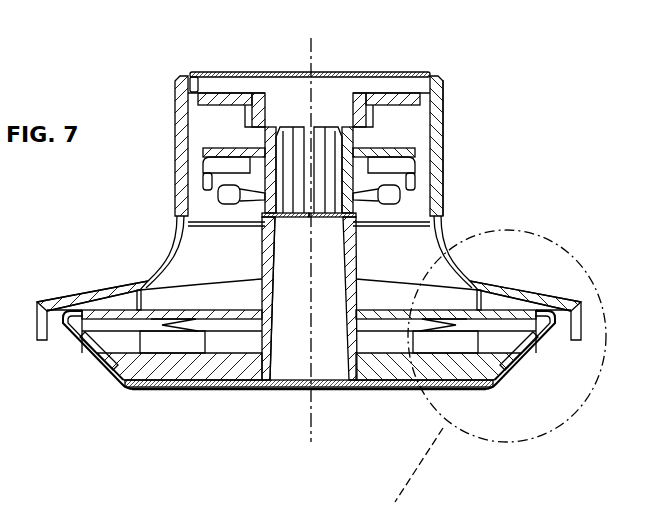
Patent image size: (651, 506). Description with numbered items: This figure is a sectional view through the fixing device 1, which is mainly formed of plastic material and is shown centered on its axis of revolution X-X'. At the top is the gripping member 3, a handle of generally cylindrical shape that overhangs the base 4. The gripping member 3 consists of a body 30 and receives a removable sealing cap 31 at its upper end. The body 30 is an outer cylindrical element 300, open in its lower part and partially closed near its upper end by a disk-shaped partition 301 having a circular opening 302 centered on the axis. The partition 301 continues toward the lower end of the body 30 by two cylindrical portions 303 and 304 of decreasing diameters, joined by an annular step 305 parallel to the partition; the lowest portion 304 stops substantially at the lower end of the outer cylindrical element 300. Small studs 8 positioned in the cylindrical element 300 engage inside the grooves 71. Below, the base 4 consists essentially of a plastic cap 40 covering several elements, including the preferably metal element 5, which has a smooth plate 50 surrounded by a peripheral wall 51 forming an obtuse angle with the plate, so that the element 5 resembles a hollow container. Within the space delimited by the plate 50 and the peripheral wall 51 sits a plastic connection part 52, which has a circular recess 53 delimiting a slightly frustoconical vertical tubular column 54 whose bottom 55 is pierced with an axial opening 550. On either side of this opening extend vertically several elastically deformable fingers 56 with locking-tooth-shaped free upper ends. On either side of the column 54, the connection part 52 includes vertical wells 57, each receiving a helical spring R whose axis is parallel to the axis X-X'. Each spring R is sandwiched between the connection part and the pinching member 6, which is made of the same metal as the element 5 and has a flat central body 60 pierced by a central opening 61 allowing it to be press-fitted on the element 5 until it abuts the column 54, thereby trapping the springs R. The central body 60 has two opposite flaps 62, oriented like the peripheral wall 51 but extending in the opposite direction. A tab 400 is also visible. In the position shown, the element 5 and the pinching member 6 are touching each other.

The fixing device 1 is at (520, 148).
The gripping member 3 is at (143, 148).
The base 4 is at (79, 268).
The element with a flat smooth surface 5 is at (289, 400).
The pinching member 6 is at (507, 307).
The studs 8 is at (218, 197).
The body 30 is at (444, 129).
The removable sealing cap 31 is at (388, 66).
The cap made of plastic material 40 is at (60, 300).
The plate 50 is at (392, 388).
The peripheral wall 51 is at (110, 377).
The connection part 52 is at (216, 372).
The circular recess 53 is at (318, 304).
The tubular column 54 is at (278, 297).
The bottom 55 is at (330, 220).
The elastically deformable fingers 56 is at (328, 122).
The vertical wells 57 is at (178, 350).
The flat central body 60 is at (443, 310).
The central opening 61 is at (362, 306).
The flaps 62 is at (90, 347).
The grooves 71 is at (262, 165).
The outer cylindrical element 300 is at (450, 173).
The disk-shaped partition 301 is at (403, 97).
The circular opening 302 is at (272, 114).
The cylindrical portion 303 is at (257, 124).
The cylindrical portion 304 is at (247, 150).
The annular step 305 is at (350, 138).
The flange tab 400 is at (136, 298).
The axial opening 550 is at (311, 220).
The helical spring R is at (200, 336).
The axis of revolution X is at (337, 228).
The axis of revolution X' is at (339, 432).